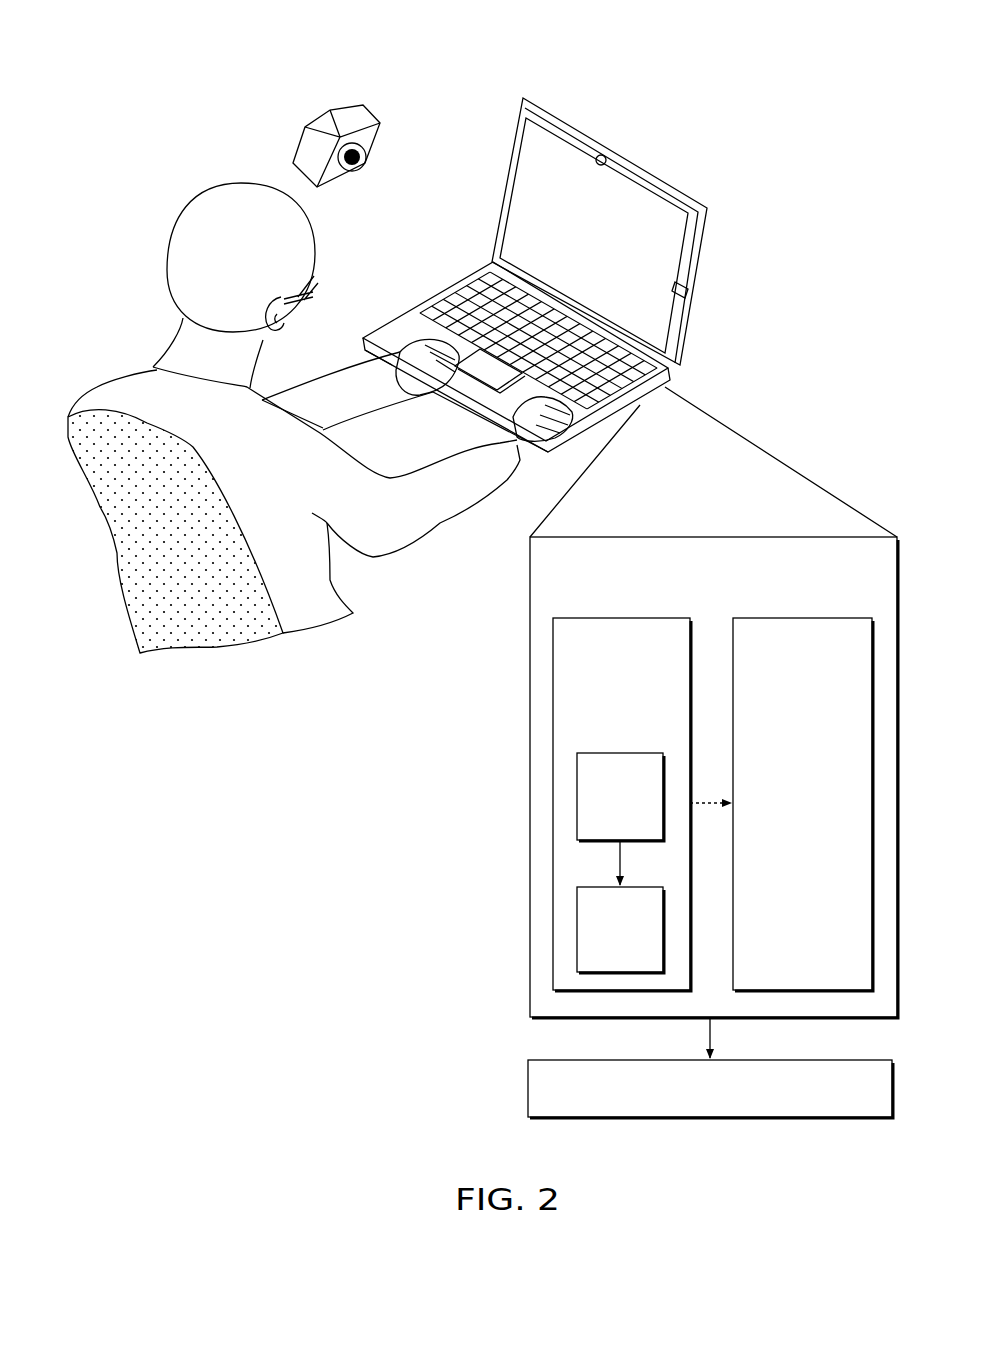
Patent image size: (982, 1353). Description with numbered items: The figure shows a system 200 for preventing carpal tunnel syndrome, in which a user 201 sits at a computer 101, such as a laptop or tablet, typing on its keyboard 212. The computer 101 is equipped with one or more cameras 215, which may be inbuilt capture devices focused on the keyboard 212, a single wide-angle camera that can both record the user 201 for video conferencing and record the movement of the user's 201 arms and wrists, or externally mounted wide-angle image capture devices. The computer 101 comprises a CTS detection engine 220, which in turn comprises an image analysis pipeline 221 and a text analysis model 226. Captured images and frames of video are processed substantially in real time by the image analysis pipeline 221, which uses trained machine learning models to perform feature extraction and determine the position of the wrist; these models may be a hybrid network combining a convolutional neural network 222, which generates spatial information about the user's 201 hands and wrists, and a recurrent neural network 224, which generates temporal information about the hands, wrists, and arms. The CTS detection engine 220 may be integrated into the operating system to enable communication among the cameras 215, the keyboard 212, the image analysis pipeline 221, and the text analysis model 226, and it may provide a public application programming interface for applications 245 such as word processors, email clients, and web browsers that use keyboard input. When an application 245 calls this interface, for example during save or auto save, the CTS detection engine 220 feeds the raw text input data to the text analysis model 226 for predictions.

The system 200 is at (210, 64).
The user 201 is at (130, 392).
The computer 101 is at (456, 410).
The keyboard 212 is at (468, 295).
The cameras 215 is at (372, 114).
The CTS detection engine 220 is at (735, 609).
The image analysis pipeline 221 is at (645, 743).
The Convolutional Neural Network (CNN) 222 is at (642, 825).
The Recurrent Neural Network (RNN) 224 is at (642, 957).
The text analysis model 226 is at (822, 743).
The applications 245 is at (730, 1104).